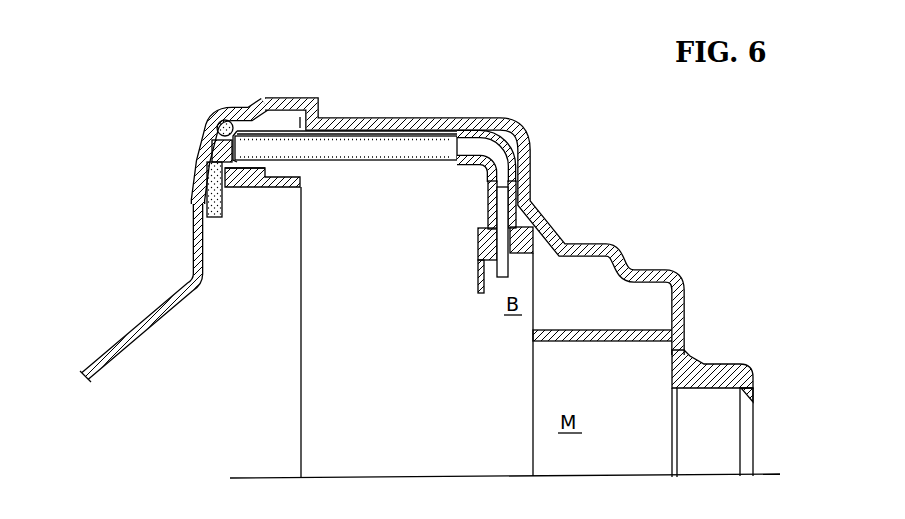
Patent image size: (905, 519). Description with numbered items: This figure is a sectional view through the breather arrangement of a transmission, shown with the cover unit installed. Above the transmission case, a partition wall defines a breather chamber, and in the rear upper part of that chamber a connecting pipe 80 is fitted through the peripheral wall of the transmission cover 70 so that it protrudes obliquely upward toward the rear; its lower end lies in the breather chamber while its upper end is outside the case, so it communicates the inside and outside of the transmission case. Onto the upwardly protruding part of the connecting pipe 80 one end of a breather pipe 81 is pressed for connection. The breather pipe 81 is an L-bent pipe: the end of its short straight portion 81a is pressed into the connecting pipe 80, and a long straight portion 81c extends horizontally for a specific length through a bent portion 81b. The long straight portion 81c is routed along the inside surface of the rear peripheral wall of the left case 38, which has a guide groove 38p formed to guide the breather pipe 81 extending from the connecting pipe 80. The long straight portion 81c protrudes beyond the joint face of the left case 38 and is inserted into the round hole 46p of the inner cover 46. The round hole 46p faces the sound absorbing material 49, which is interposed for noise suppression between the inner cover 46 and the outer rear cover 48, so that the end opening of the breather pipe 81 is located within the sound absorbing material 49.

The left case 38 is at (636, 240).
The guide groove 38p is at (512, 154).
The inner cover 46 is at (226, 200).
The round hole 46p is at (256, 166).
The outer rear cover 48 is at (192, 223).
The sound absorbing material 49 is at (213, 180).
The transmission cover 70 is at (478, 281).
The connecting pipe 80 is at (508, 270).
The breather pipe 81 is at (447, 248).
The short straight portion 81a is at (486, 203).
The bent portion 81b is at (480, 171).
The long straight portion 81c is at (358, 162).